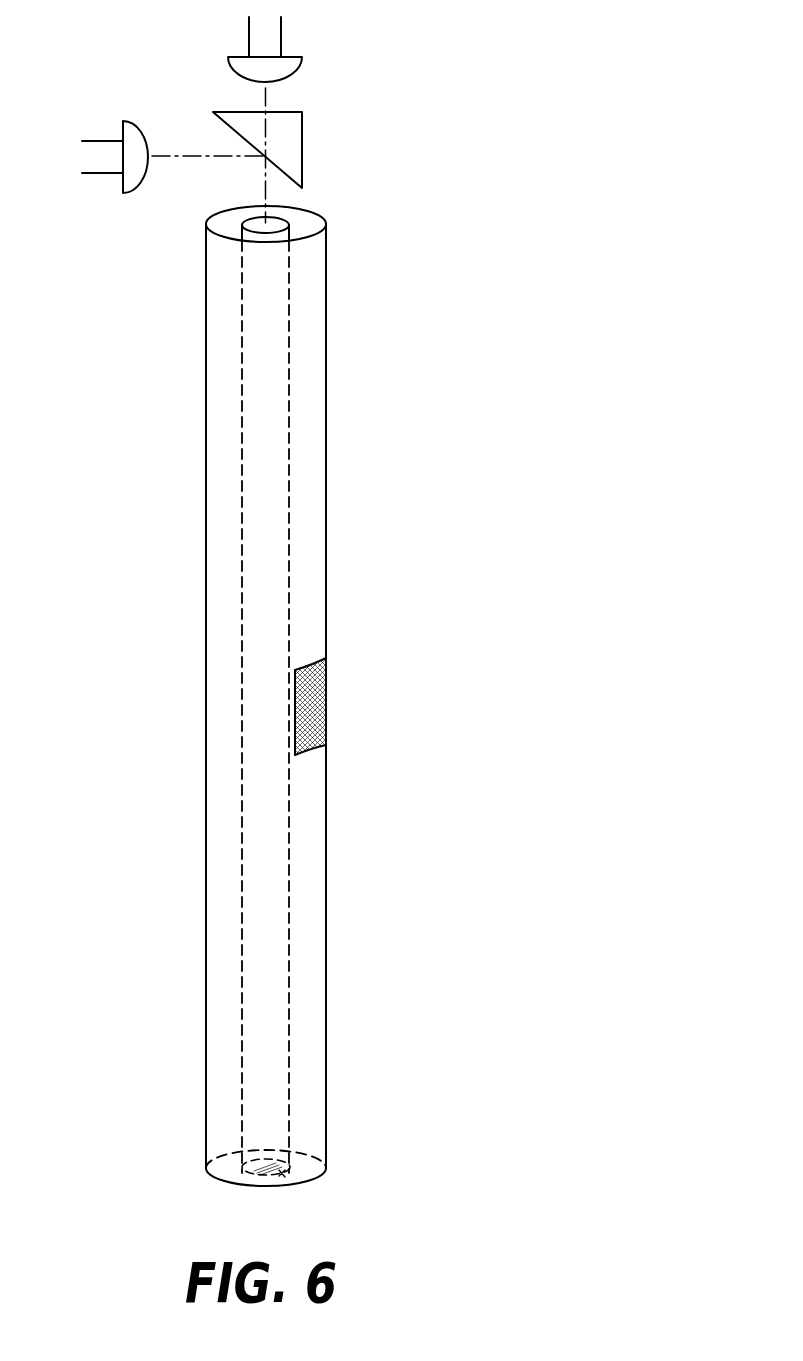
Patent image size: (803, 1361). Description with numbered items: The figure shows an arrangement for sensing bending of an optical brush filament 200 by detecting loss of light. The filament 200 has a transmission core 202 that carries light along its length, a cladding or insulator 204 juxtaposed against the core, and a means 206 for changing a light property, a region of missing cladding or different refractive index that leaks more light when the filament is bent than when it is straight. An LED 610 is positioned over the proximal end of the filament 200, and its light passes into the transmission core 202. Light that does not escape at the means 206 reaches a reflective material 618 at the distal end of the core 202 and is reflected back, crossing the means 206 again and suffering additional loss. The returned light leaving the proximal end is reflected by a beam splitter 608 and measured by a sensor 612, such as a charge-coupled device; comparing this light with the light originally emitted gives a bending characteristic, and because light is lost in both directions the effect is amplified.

The optical brush filament 200 is at (319, 705).
The transmission core 202 is at (289, 302).
The cladding or insulator 204 is at (317, 437).
The means for changing a light property 206 is at (318, 697).
The beam splitter 608 is at (302, 140).
The LED 610 is at (302, 61).
The sensor 612 is at (127, 120).
The reflective material 618 is at (285, 1178).